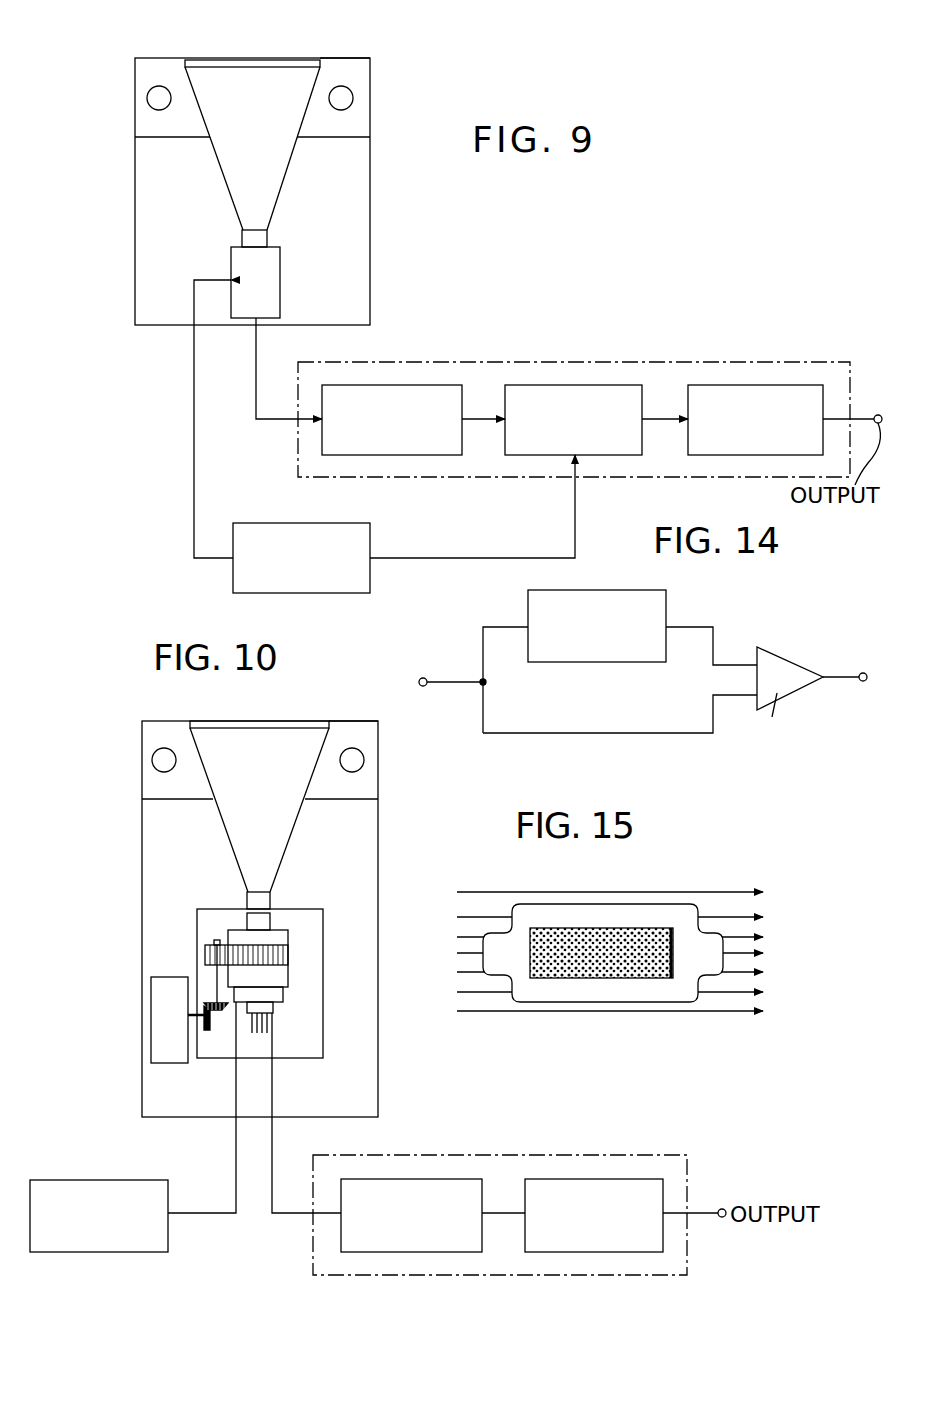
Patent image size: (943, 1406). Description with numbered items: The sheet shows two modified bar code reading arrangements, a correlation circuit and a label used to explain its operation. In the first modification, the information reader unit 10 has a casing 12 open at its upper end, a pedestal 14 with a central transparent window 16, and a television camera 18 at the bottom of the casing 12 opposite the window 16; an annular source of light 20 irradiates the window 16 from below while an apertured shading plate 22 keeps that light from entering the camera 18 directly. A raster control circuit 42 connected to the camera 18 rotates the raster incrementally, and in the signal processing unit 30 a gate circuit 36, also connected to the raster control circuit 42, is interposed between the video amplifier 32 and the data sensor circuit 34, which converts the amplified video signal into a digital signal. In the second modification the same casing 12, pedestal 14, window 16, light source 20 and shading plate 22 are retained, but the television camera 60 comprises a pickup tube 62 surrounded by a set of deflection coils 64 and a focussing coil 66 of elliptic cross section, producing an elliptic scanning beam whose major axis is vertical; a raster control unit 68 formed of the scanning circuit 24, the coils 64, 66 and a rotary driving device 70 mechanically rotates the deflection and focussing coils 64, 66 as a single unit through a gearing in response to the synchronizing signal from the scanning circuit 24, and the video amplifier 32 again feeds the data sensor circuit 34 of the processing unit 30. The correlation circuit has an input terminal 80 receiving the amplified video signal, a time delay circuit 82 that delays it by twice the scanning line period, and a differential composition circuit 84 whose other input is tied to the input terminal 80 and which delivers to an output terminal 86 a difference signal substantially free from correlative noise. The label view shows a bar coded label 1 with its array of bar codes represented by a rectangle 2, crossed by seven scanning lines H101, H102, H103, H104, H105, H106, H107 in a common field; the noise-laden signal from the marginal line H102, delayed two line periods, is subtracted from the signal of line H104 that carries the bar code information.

In FIG. 9, the information reader unit 10 is at (263, 21).
In FIG. 9, the casing 12 is at (370, 198).
In FIG. 10, the casing 12 is at (378, 855).
In FIG. 9, the pedestal 14 is at (337, 53).
In FIG. 10, the pedestal 14 is at (339, 721).
In FIG. 9, the transparent window 16 is at (232, 57).
In FIG. 10, the transparent window 16 is at (277, 721).
In FIG. 9, the television camera 18 is at (282, 268).
In FIG. 9, the annular source of light 20 is at (350, 97).
In FIG. 10, the annular source of light 20 is at (155, 762).
In FIG. 9, the apertured shading plate 22 is at (185, 138).
In FIG. 10, the apertured shading plate 22 is at (178, 801).
In FIG. 10, the scanning circuit 24 is at (100, 1180).
In FIG. 9, the signal processing unit 30 is at (482, 352).
In FIG. 10, the signal processing unit 30 is at (527, 1132).
In FIG. 9, the video amplifier 32 is at (462, 403).
In FIG. 10, the video amplifier 32 is at (482, 1198).
In FIG. 9, the data sensor circuit 34 is at (823, 410).
In FIG. 10, the data sensor circuit 34 is at (663, 1197).
In FIG. 9, the gate circuit 36 is at (642, 403).
In FIG. 9, the raster control circuit 42 is at (370, 540).
In FIG. 10, the television camera 60 is at (323, 920).
In FIG. 10, the pickup tube 62 is at (273, 1008).
In FIG. 10, the set of deflection coils 64 is at (283, 995).
In FIG. 10, the focussing coil 66 is at (288, 968).
In FIG. 10, the raster control unit 68 is at (128, 1103).
In FIG. 10, the rotary driving device 70 is at (151, 1033).
In FIG. 14, the input terminal 80 is at (420, 680).
In FIG. 14, the time delay circuit 82 is at (666, 607).
In FIG. 14, the differential composition circuit 84 is at (780, 660).
In FIG. 14, the output terminal 86 is at (863, 673).
In FIG. 15, the bar coded label 1 is at (672, 908).
In FIG. 15, the array of bar codes 2 is at (628, 928).
In FIG. 15, the scanning line H101 is at (637, 893).
In FIG. 15, the scanning line H102 is at (637, 918).
In FIG. 15, the scanning line H103 is at (637, 938).
In FIG. 15, the scanning line H104 is at (637, 957).
In FIG. 15, the scanning line H105 is at (637, 977).
In FIG. 15, the scanning line H106 is at (637, 997).
In FIG. 15, the scanning line H107 is at (637, 1018).